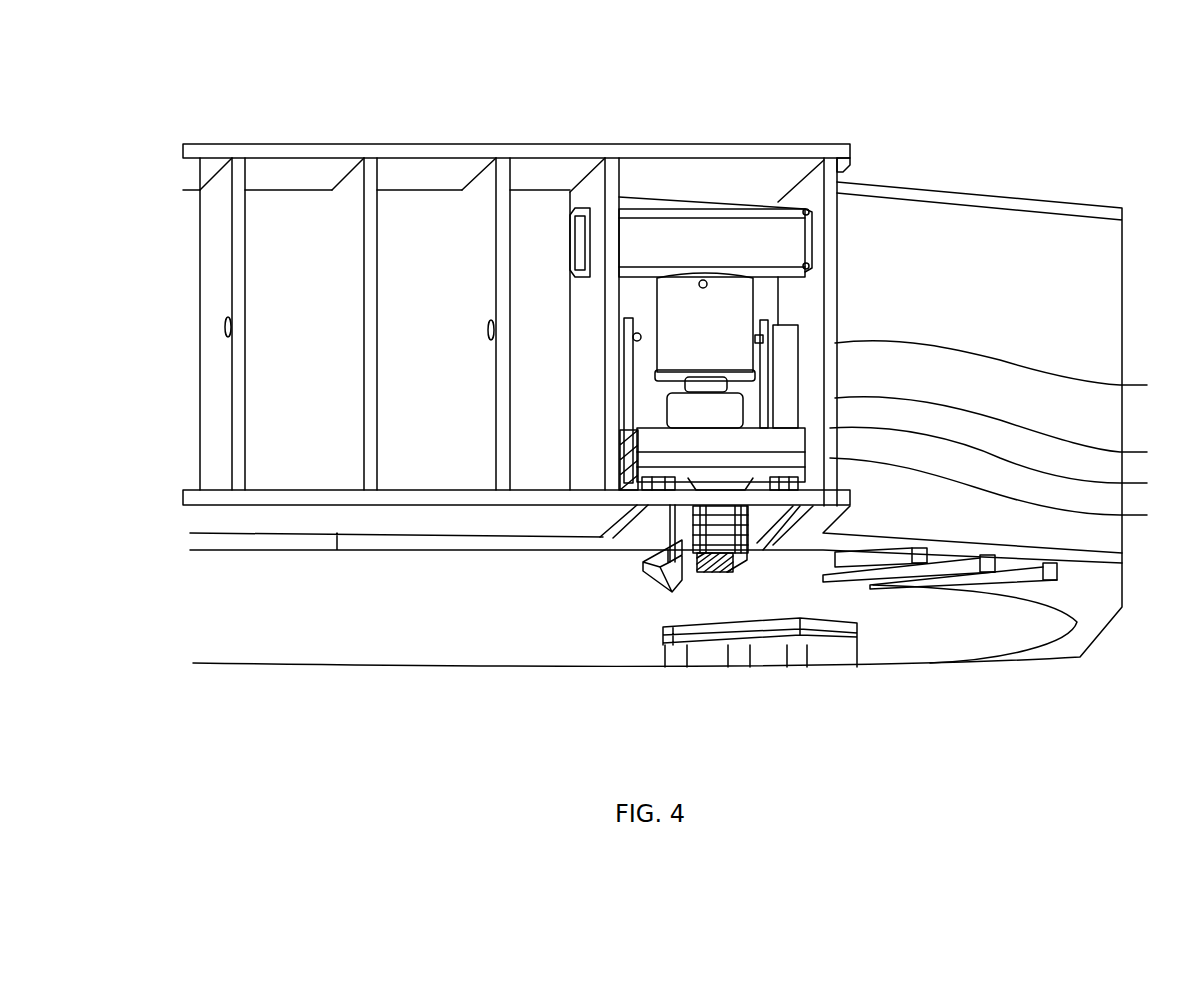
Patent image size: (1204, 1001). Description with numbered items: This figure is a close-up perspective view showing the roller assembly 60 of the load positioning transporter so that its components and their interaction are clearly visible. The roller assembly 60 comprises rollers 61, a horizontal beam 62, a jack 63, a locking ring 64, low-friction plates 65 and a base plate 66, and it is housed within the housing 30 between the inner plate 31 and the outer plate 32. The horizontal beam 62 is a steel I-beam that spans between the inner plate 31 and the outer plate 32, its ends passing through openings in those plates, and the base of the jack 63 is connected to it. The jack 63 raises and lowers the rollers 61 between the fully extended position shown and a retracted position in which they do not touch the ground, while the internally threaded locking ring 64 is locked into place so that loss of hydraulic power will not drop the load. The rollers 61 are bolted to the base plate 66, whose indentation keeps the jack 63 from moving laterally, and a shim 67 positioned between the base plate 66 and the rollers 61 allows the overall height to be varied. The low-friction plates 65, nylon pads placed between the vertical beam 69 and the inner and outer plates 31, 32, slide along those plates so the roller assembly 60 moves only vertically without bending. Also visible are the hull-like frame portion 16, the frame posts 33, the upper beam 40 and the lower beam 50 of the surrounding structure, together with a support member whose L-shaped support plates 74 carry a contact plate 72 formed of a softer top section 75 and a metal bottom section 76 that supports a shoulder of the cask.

The hull 16 is at (1110, 338).
The housing 30 is at (836, 309).
The inner plate 31 is at (1005, 370).
The outer plate 32 is at (611, 189).
The frame posts 33 is at (226, 196).
The upper deck beam 40 is at (653, 152).
The lower deck beam 50 is at (368, 493).
The roller assembly 60 is at (808, 290).
The rollers 61 is at (710, 575).
The horizontal beam 62 is at (717, 237).
The jack 63 is at (667, 357).
The locking ring 64 is at (657, 400).
The low-friction plates 65 is at (618, 335).
The base plate 66 is at (906, 462).
The shim 67 is at (906, 493).
The vertical beam 69 is at (612, 320).
The contact plate 72 is at (740, 633).
The support plates 74 is at (836, 653).
The top section 75 is at (690, 628).
The bottom section 76 is at (775, 633).